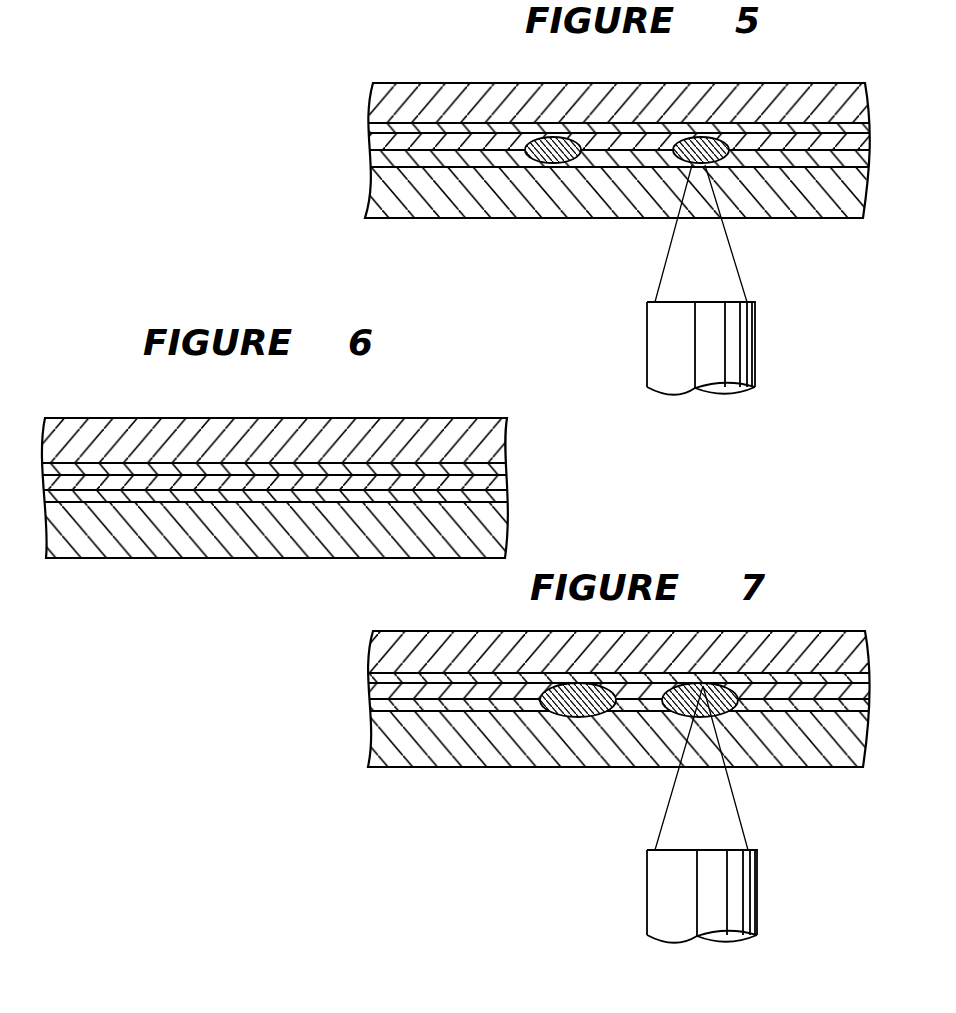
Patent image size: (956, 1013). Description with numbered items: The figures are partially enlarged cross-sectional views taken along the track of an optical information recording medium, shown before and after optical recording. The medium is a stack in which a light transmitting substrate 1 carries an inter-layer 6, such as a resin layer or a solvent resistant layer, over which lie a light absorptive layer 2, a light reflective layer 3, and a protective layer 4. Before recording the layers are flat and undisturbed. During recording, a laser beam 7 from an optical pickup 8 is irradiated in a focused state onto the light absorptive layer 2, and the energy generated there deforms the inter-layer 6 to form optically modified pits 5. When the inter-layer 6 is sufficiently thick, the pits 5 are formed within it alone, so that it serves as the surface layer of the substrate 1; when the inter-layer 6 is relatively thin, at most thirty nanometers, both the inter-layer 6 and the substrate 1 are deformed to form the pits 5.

In FIG. 5, the light transmitting substrate 1 is at (798, 197).
In FIG. 6, the light transmitting substrate 1 is at (276, 525).
In FIG. 7, the light transmitting substrate 1 is at (808, 745).
In FIG. 5, the light absorptive layer 2 is at (447, 145).
In FIG. 6, the light absorptive layer 2 is at (87, 480).
In FIG. 7, the light absorptive layer 2 is at (408, 688).
In FIG. 5, the light reflective layer 3 is at (538, 125).
In FIG. 6, the light reflective layer 3 is at (332, 468).
In FIG. 7, the light reflective layer 3 is at (522, 680).
In FIG. 5, the protective layer 4 is at (476, 113).
In FIG. 6, the protective layer 4 is at (240, 445).
In FIG. 7, the protective layer 4 is at (455, 665).
In FIG. 5, the optically modified pits 5 is at (545, 163).
In FIG. 7, the optically modified pits 5 is at (572, 714).
In FIG. 5, the inter-layer 6 is at (390, 157).
In FIG. 6, the inter-layer 6 is at (165, 500).
In FIG. 7, the inter-layer 6 is at (473, 709).
In FIG. 5, the laser beam 7 is at (685, 268).
In FIG. 7, the laser beam 7 is at (682, 824).
In FIG. 5, the optical pickup 8 is at (735, 342).
In FIG. 7, the optical pickup 8 is at (737, 890).